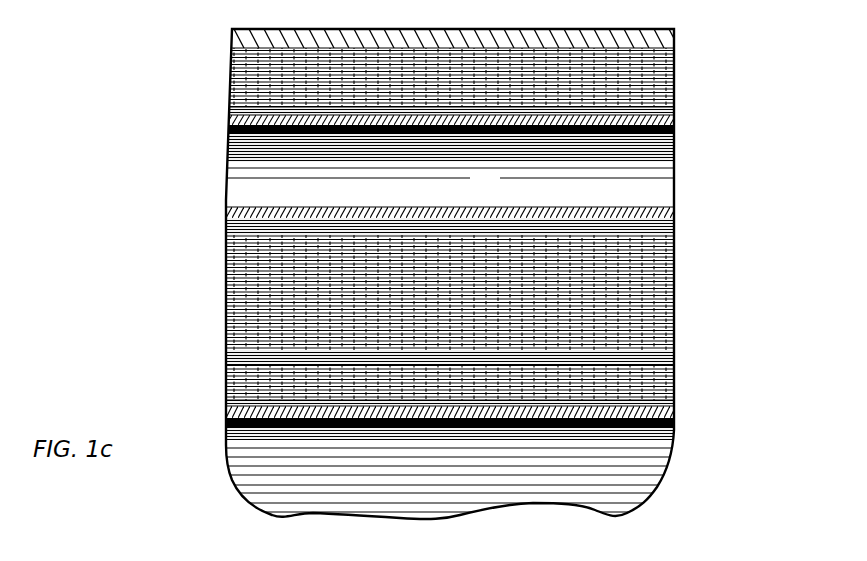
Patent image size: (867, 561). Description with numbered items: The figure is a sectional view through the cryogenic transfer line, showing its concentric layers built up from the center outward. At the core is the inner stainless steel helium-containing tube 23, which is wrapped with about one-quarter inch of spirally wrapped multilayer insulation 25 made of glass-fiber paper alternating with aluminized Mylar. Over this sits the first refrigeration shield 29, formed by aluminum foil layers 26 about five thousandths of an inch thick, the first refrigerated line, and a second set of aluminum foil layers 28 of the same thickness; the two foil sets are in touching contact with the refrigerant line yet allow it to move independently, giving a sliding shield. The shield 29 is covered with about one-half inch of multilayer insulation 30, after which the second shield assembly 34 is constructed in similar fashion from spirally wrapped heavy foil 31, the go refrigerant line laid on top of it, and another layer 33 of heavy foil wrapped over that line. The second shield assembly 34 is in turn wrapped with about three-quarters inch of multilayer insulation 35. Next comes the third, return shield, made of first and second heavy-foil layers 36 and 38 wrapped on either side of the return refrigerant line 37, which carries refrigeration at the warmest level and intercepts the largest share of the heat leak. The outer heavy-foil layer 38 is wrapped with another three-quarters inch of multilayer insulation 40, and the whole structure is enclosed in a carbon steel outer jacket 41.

The inner stainless steel helium-containing tube 23 is at (230, 461).
The multilayer insulation 25 is at (228, 380).
The aluminum foil layers 26 is at (673, 358).
The second set of aluminum foil layers 28 is at (673, 360).
The shield 29 is at (498, 361).
The multilayer insulation 30 is at (228, 290).
The heavy foil 31 is at (673, 228).
The layer of heavy foil 33 is at (673, 231).
The second shield assembly 34 is at (478, 229).
The multilayer insulation 35 is at (228, 228).
The first heavy-foil layer 36 is at (228, 216).
The return refrigerant line 37 is at (233, 160).
The second heavy-foil layer 38 is at (233, 116).
The multilayer insulation 40 is at (233, 78).
The outer jacket 41 is at (234, 32).